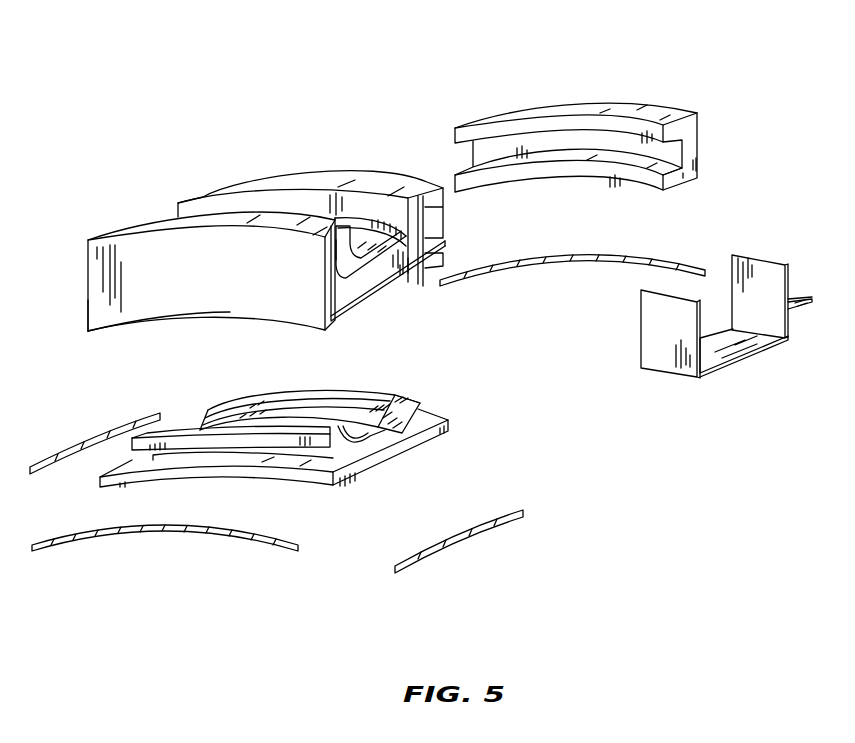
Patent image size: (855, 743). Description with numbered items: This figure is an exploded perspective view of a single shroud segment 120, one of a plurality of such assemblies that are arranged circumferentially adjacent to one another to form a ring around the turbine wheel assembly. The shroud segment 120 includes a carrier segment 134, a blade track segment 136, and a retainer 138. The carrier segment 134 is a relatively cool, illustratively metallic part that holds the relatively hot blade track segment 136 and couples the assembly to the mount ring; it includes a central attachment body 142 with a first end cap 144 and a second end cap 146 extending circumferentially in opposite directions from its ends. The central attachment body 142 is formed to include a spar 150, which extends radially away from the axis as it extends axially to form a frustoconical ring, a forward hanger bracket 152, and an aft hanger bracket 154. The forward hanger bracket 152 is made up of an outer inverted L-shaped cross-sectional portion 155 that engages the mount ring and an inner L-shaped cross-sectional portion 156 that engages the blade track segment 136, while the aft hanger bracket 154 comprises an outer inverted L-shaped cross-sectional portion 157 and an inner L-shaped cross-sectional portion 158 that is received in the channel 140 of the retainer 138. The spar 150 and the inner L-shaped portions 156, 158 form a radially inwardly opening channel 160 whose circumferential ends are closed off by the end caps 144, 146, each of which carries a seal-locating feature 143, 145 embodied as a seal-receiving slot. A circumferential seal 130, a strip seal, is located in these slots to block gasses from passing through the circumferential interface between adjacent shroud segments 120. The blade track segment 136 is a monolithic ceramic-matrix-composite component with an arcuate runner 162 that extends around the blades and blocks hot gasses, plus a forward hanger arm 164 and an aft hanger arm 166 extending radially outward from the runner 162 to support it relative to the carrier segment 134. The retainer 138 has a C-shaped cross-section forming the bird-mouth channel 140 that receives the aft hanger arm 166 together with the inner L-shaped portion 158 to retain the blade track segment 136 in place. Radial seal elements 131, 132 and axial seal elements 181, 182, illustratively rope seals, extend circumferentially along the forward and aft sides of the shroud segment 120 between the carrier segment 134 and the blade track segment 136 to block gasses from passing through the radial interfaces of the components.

The shroud segment 120 is at (624, 123).
The circumferential seal 130 is at (804, 324).
The radial seal element 131 is at (248, 546).
The radial seal element 132 is at (687, 260).
The carrier segment 134 is at (275, 241).
The blade track segment 136 is at (294, 430).
The retainer 138 is at (712, 131).
The channel 140 is at (572, 166).
The central attachment body 142 is at (316, 176).
The seal-locating feature 143 is at (374, 279).
The first end cap 144 is at (381, 266).
The seal-locating feature 145 is at (86, 321).
The second end cap 146 is at (86, 314).
The spar 150 is at (365, 232).
The forward hanger bracket 152 is at (280, 275).
The aft hanger bracket 154 is at (441, 216).
The outer inverted L-shaped cross-sectional portion 155 is at (350, 254).
The inner L-shaped cross-sectional portion 156 is at (275, 249).
The outer inverted L-shaped cross-sectional portion 157 is at (412, 176).
The inner L-shaped cross-sectional portion 158 is at (441, 257).
The radially inwardly opening channel 160 is at (341, 326).
The arcuate runner 162 is at (374, 464).
The forward hanger arm 164 is at (175, 424).
The aft hanger arm 166 is at (384, 386).
The axial seal element 181 is at (90, 424).
The axial seal element 182 is at (495, 517).